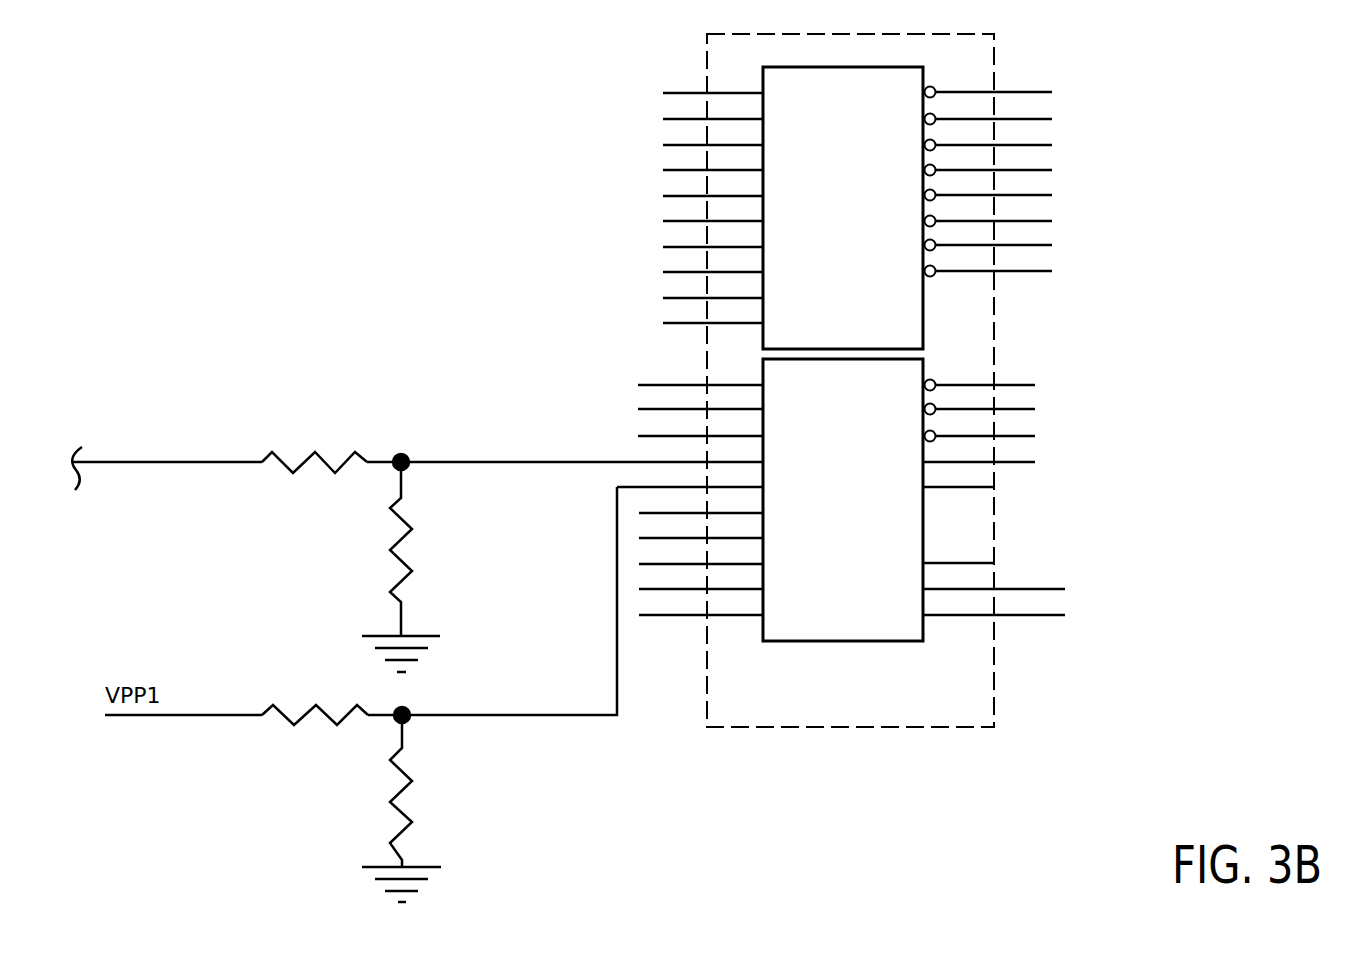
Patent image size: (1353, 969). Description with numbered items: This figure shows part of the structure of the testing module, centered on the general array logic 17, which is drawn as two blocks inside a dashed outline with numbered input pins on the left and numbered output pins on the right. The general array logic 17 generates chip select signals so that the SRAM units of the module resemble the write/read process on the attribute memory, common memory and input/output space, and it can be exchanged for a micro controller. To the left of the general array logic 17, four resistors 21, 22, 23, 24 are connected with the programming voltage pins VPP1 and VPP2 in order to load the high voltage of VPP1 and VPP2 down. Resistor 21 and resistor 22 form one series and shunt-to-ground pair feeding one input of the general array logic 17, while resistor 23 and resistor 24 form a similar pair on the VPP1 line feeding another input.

The general array logic 17 is at (994, 353).
The resistor 21 is at (355, 452).
The resistor 22 is at (412, 571).
The resistor 23 is at (294, 725).
The resistor 24 is at (412, 822).